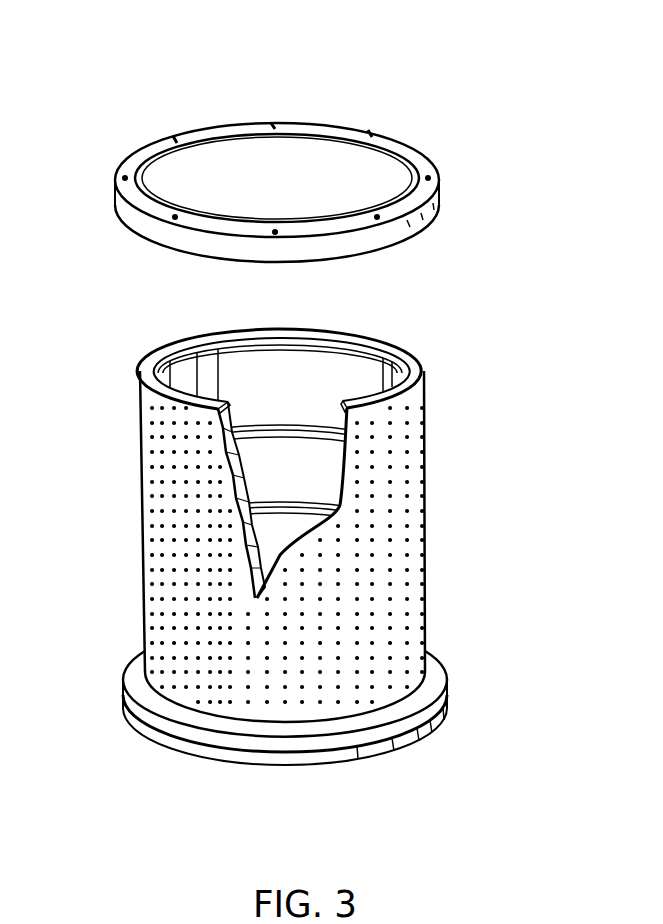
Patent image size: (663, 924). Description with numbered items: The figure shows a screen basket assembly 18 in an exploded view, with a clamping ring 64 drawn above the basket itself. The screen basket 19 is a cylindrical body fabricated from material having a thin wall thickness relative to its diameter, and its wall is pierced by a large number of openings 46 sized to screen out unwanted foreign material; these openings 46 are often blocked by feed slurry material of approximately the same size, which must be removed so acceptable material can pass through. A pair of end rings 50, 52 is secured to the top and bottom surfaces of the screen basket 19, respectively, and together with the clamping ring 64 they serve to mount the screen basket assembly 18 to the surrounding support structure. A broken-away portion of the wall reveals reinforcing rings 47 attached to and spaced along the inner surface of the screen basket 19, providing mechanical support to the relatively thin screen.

The screen basket assembly 18 is at (478, 102).
The clamping ring 64 is at (443, 204).
The screen basket 19 is at (277, 506).
The end ring 50 is at (418, 350).
The reinforcing rings 47 is at (269, 428).
The openings 46 is at (410, 638).
The end ring 52 is at (449, 677).